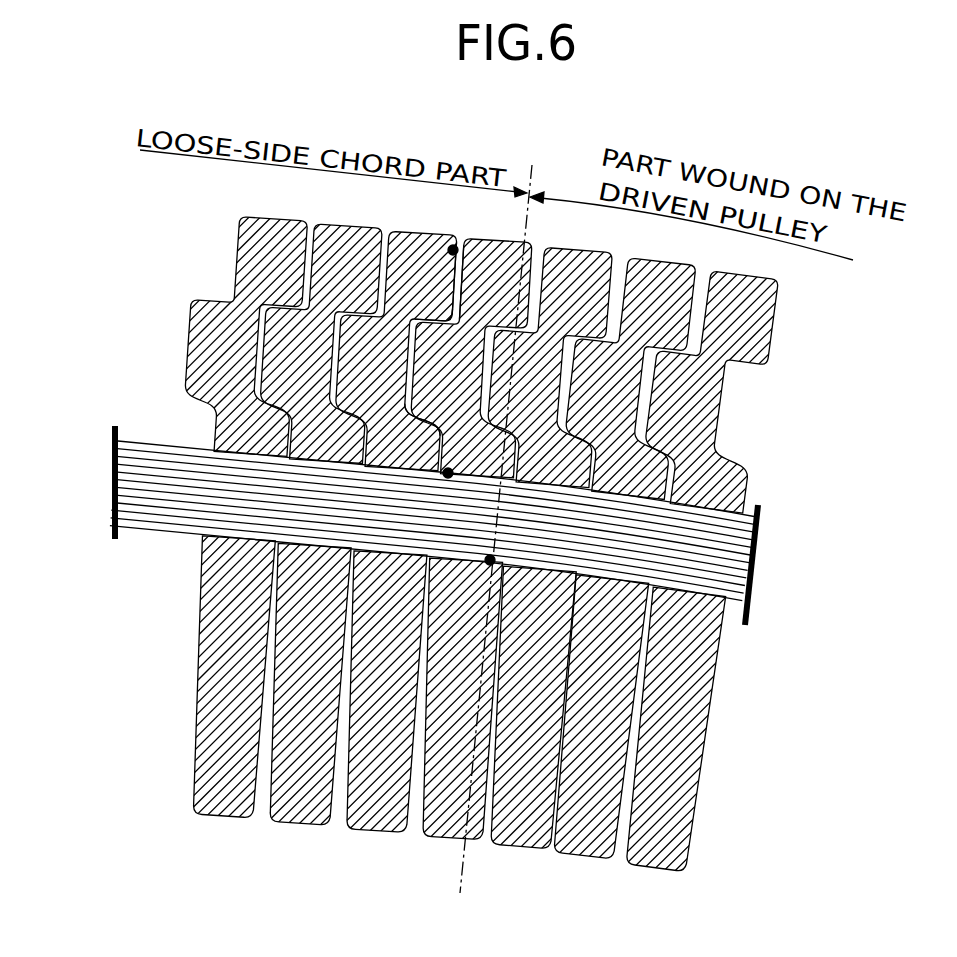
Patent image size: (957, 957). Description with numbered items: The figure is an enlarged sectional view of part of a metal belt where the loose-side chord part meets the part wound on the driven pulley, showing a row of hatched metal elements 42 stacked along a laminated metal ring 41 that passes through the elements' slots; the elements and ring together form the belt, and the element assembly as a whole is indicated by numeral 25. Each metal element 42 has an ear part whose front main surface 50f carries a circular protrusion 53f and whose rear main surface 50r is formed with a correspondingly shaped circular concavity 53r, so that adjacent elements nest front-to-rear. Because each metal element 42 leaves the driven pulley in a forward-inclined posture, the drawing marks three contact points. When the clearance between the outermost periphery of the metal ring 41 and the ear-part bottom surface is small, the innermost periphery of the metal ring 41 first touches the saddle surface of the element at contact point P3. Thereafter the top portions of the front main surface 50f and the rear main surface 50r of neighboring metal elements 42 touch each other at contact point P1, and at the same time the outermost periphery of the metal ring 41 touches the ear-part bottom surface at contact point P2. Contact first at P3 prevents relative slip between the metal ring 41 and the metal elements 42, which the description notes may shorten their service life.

The metal element 25 is at (708, 718).
The metal ring 41 is at (746, 519).
The metal element 42 is at (513, 838).
The front main surface 50f is at (452, 297).
The rear main surface 50r is at (456, 273).
The protrusion 53f is at (410, 388).
The concavity 53r is at (428, 340).
The contact point P1 is at (450, 248).
The contact point P2 is at (449, 467).
The contact point P3 is at (494, 558).